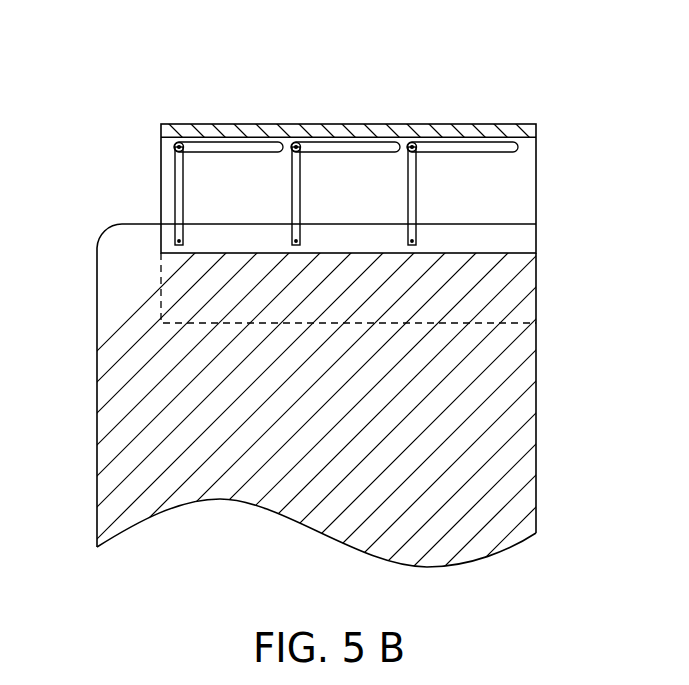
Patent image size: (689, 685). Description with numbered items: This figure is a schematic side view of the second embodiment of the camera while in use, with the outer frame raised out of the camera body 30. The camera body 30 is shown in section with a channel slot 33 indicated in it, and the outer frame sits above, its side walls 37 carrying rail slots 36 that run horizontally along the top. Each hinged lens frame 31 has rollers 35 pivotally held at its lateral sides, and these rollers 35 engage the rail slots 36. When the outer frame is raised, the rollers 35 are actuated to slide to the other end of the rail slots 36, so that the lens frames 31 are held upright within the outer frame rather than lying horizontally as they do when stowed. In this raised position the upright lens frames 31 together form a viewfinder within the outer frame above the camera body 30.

The camera body 30 is at (105, 441).
The hinged lens frames 31 is at (418, 193).
The channel slots 33 is at (525, 288).
The rollers 35 is at (414, 145).
The rail slots 36 is at (369, 147).
The side walls 37 is at (525, 158).